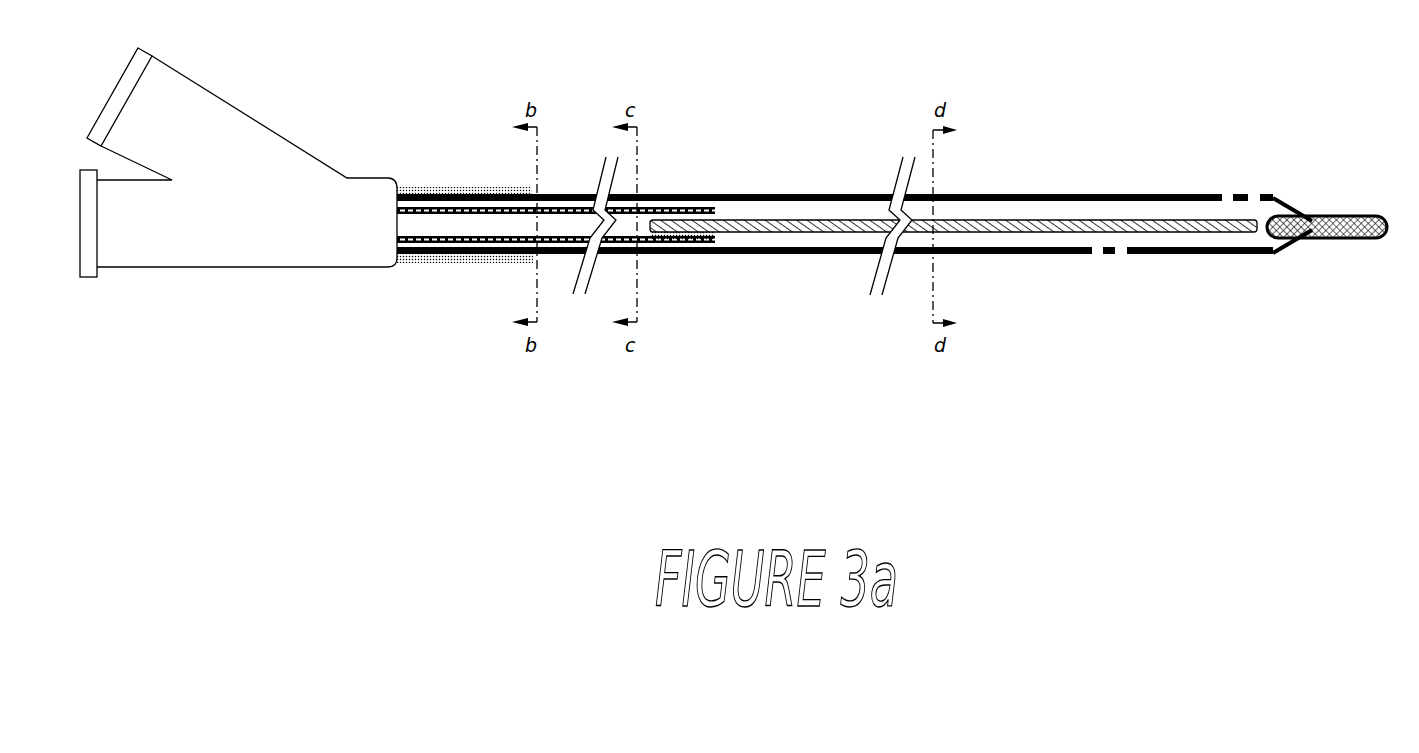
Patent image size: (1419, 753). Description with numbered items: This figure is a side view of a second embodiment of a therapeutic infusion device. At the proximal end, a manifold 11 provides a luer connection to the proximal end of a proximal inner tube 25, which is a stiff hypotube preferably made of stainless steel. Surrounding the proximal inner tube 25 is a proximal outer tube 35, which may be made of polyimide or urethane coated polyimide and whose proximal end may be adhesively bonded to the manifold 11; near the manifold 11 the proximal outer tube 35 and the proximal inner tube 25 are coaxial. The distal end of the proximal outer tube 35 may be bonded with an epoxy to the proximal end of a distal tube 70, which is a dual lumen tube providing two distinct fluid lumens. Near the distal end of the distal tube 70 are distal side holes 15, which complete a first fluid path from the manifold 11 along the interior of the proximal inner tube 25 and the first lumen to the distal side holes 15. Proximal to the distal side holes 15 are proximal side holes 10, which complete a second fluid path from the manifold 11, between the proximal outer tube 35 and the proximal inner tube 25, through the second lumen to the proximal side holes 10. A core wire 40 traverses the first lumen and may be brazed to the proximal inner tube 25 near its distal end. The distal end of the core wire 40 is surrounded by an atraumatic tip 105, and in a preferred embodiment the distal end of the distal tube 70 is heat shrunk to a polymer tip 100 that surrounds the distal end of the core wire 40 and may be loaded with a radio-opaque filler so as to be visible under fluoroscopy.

The proximal side holes 10 is at (1098, 260).
The manifold 11 is at (337, 175).
The distal side holes 15 is at (1230, 195).
The proximal inner tube 25 is at (467, 207).
The proximal outer tube 35 is at (547, 200).
The core wire 40 is at (770, 222).
The distal tube 70 is at (1012, 197).
The polymer tip 100 is at (1337, 143).
The atraumatic tip 105 is at (1350, 216).